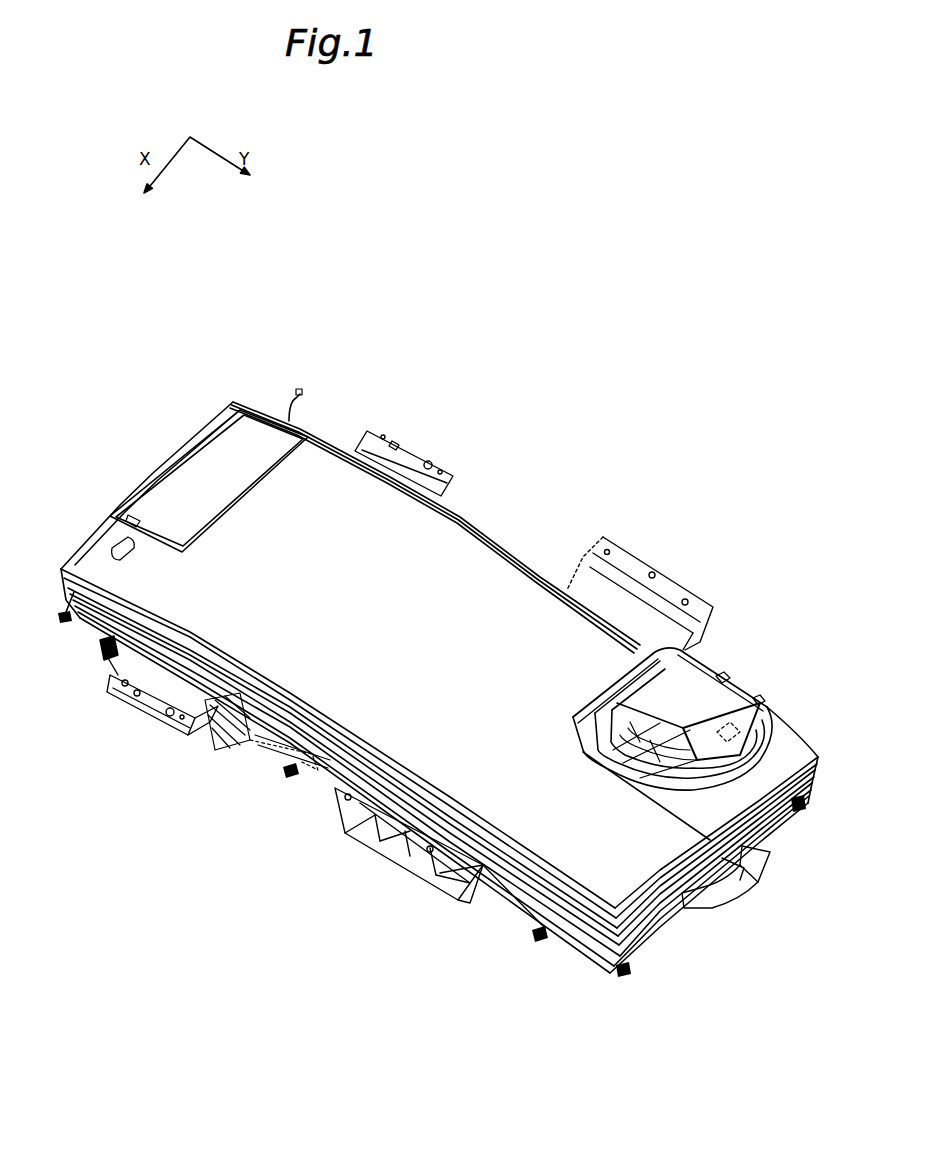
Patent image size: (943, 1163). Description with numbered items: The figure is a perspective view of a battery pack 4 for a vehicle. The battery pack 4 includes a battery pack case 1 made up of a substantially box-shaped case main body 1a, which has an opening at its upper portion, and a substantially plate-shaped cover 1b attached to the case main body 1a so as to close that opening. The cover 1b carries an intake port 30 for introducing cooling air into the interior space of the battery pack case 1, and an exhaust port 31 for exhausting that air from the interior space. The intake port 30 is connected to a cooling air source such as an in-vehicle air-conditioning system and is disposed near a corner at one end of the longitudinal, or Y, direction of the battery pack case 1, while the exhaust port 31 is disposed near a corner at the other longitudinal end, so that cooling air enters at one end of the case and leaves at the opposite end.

The battery pack 4 is at (661, 229).
The intake port 30 is at (108, 535).
The exhaust port 31 is at (773, 717).
The battery pack case 1 is at (447, 927).
The case main body 1a is at (513, 905).
The cover 1b is at (508, 890).